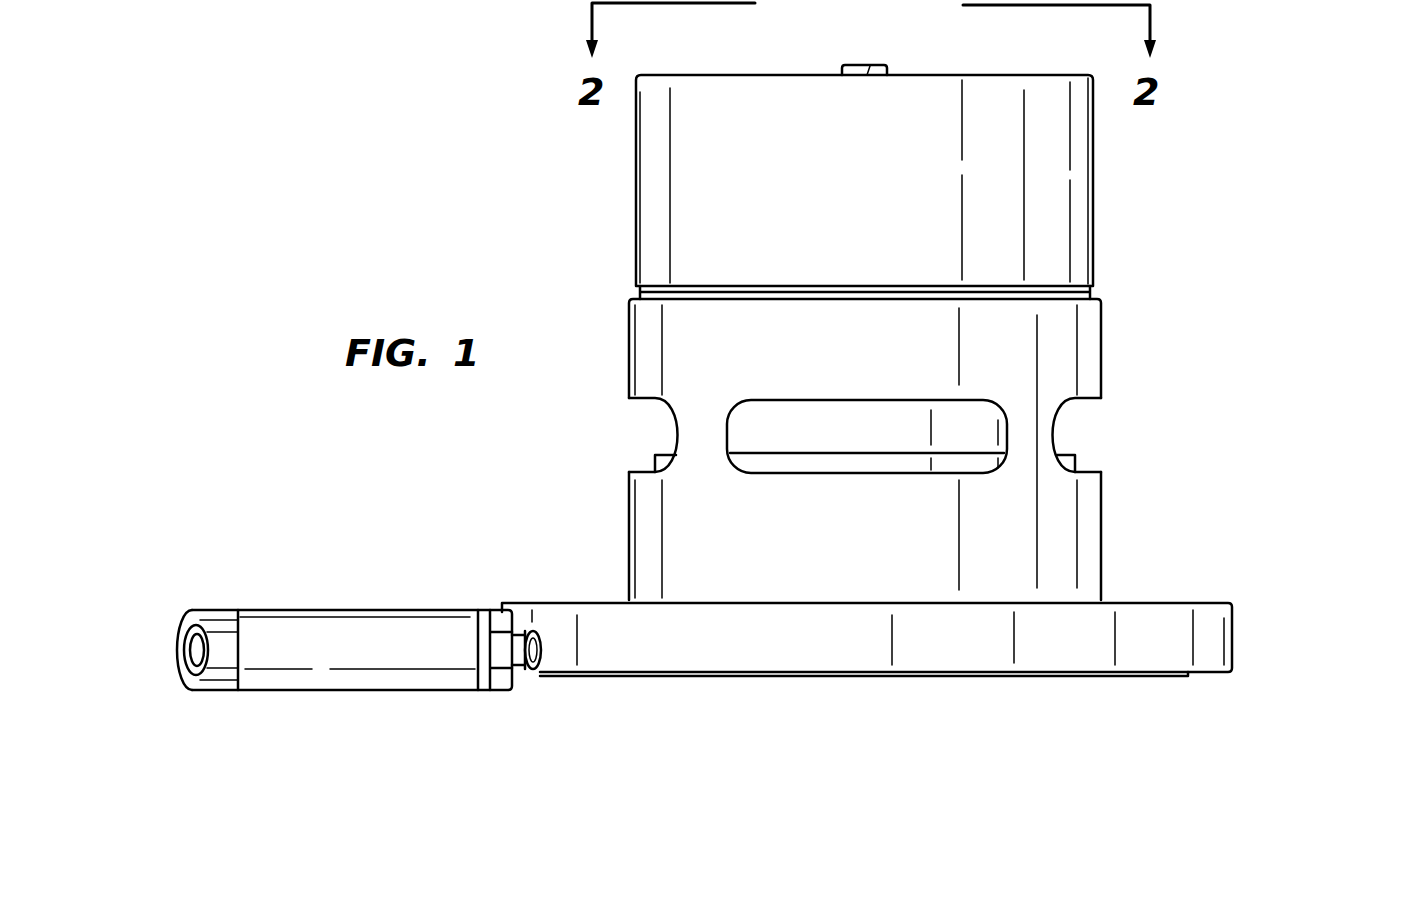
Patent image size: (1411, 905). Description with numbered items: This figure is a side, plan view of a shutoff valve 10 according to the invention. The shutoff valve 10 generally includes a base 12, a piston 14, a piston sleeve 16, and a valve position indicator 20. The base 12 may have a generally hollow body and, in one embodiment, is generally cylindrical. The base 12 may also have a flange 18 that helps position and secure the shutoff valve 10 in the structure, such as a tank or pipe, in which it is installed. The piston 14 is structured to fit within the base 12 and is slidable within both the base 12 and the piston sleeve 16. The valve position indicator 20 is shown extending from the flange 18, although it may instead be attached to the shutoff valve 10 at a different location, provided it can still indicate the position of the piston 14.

The shutoff valve 10 is at (458, 134).
The base 12 is at (1110, 375).
The piston 14 is at (1090, 430).
The piston sleeve 16 is at (1094, 226).
The flange 18 is at (1232, 635).
The valve position indicator 20 is at (318, 557).